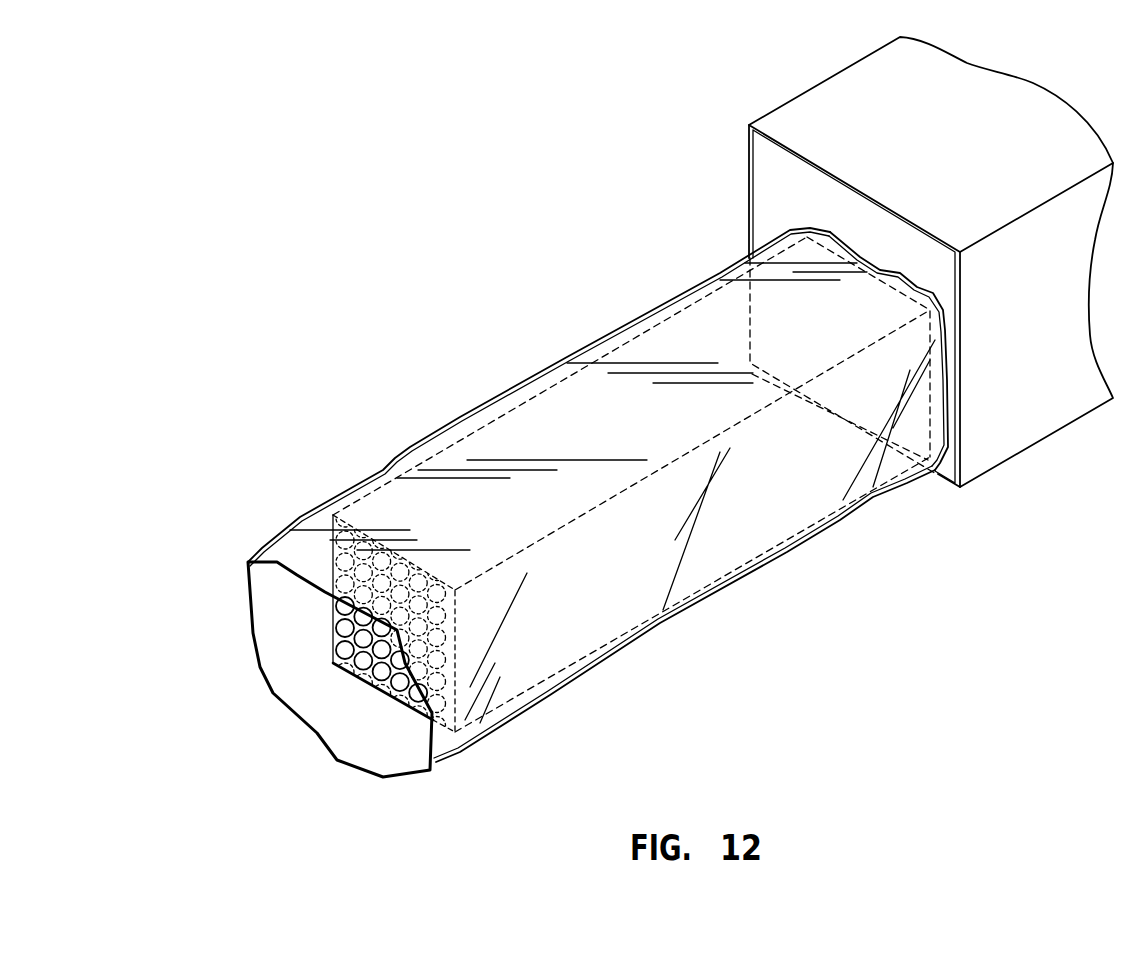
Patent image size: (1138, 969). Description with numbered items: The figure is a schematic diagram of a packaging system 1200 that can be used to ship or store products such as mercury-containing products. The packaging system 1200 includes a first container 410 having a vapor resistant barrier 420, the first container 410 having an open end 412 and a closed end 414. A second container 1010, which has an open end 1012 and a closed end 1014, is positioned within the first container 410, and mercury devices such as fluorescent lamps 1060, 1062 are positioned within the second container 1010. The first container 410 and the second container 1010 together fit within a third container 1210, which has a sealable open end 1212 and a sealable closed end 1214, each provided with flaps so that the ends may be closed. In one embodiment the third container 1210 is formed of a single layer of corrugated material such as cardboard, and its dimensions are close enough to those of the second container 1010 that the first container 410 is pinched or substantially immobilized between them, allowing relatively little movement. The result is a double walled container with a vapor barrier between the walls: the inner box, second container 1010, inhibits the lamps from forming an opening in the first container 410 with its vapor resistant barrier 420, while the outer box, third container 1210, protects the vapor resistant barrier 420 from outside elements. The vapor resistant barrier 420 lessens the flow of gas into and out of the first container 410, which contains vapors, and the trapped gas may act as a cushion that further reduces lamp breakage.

The packaging system 1200 is at (659, 426).
The third container 1210 is at (822, 102).
The open end 1212 is at (772, 190).
The closed end 1214 is at (1052, 115).
The second container 1010 is at (780, 523).
The closed end 1014 is at (825, 250).
The open end 1012 is at (330, 640).
The fluorescent lamp 1060 is at (400, 688).
The fluorescent lamp 1062 is at (340, 633).
The first container 410 is at (550, 693).
The open end 412 is at (292, 695).
The closed end 414 is at (867, 263).
The vapor resistant barrier 420 is at (733, 590).